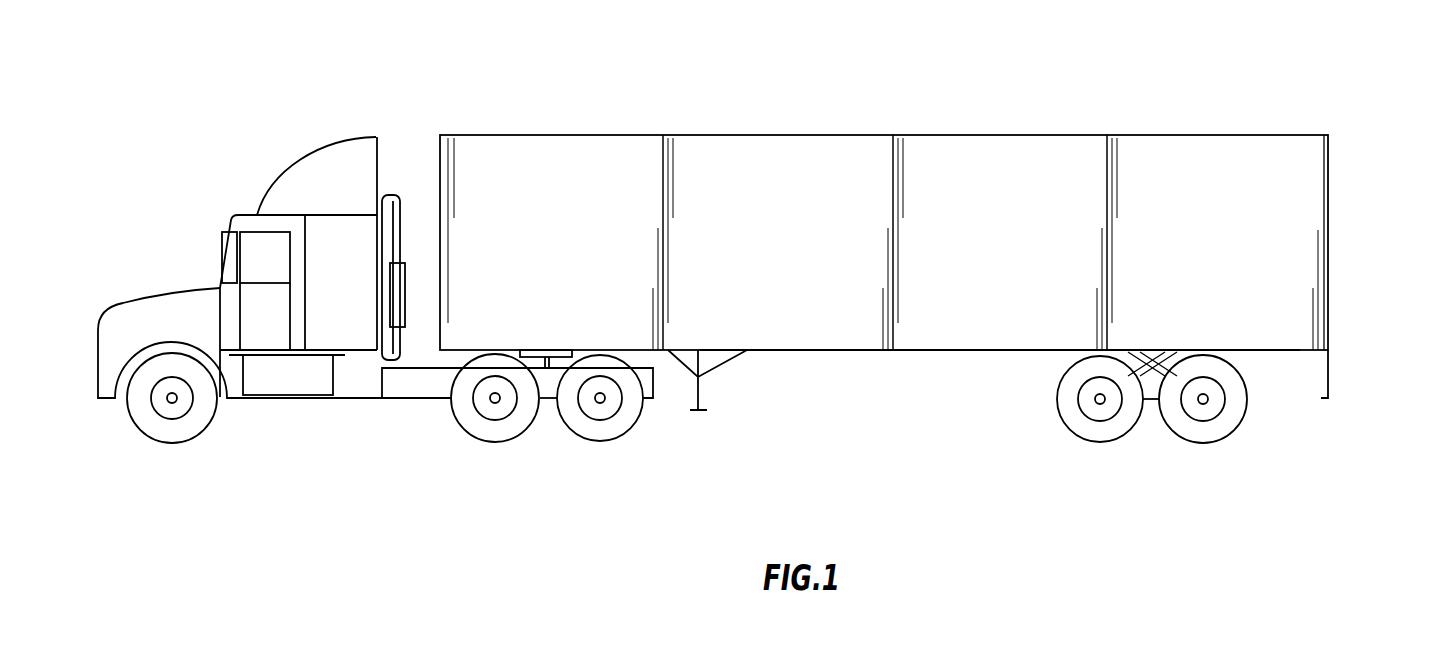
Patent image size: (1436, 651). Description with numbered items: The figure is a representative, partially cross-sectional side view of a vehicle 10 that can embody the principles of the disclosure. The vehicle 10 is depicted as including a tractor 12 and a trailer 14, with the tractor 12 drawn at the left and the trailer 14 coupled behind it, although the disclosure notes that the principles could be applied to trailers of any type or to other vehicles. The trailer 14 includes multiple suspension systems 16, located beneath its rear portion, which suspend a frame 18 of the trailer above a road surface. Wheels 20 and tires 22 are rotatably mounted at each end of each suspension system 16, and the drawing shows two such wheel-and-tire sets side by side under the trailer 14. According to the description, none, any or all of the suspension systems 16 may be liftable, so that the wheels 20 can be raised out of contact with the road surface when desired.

The vehicle 10 is at (767, 272).
The tractor 12 is at (232, 217).
The trailer 14 is at (1338, 182).
The suspension system 16 is at (1133, 426).
The frame 18 is at (787, 350).
The wheel 20 is at (1093, 412).
The tire 22 is at (1110, 443).